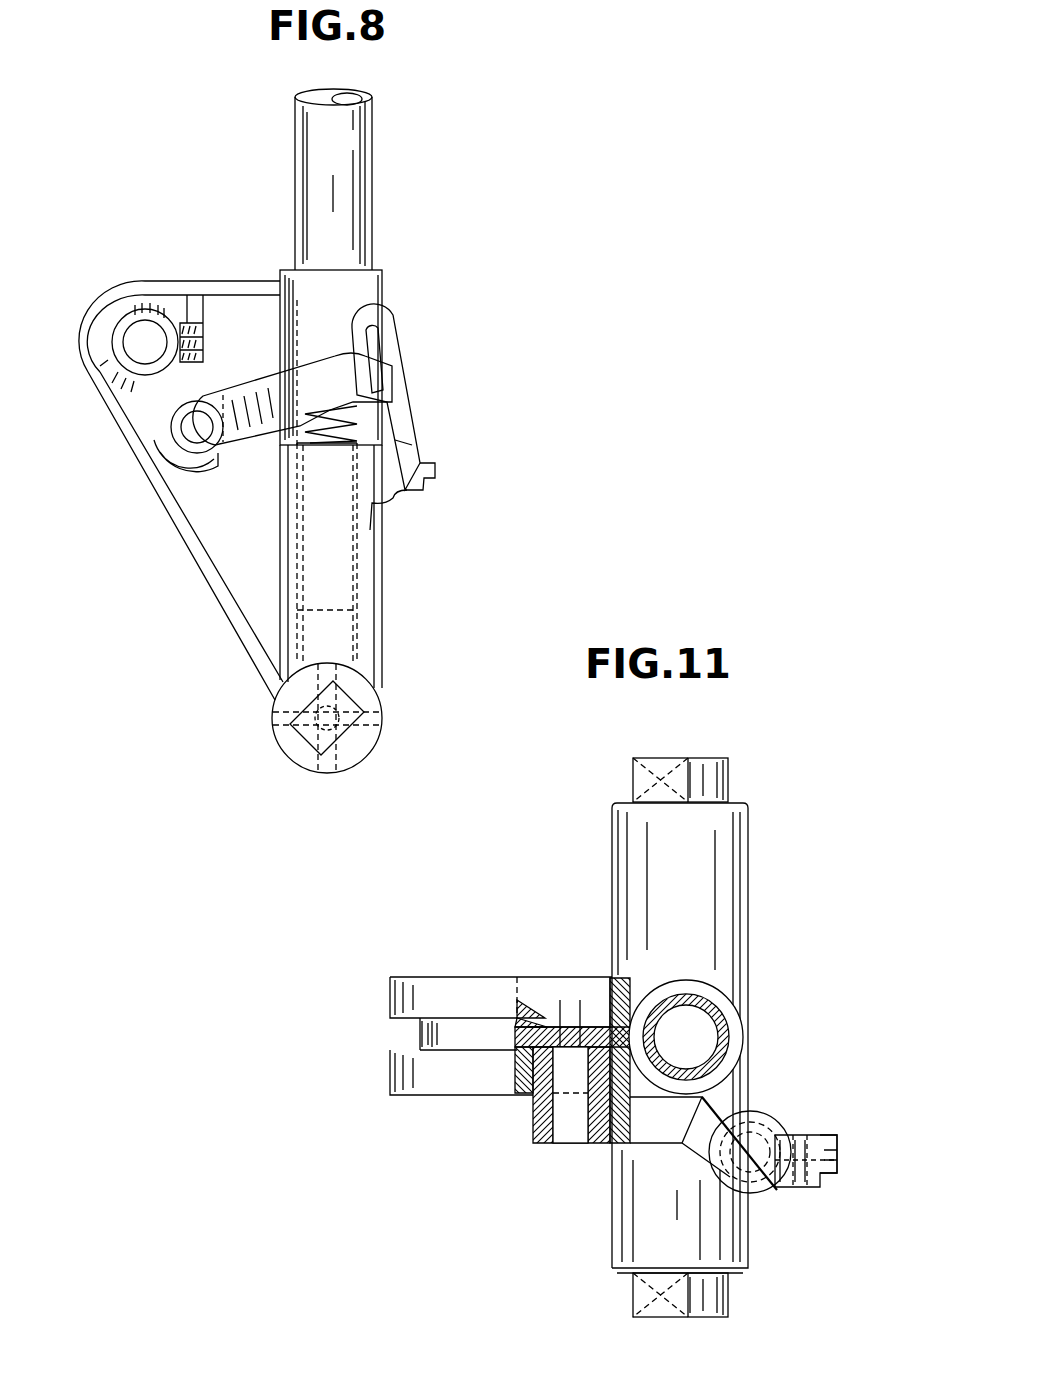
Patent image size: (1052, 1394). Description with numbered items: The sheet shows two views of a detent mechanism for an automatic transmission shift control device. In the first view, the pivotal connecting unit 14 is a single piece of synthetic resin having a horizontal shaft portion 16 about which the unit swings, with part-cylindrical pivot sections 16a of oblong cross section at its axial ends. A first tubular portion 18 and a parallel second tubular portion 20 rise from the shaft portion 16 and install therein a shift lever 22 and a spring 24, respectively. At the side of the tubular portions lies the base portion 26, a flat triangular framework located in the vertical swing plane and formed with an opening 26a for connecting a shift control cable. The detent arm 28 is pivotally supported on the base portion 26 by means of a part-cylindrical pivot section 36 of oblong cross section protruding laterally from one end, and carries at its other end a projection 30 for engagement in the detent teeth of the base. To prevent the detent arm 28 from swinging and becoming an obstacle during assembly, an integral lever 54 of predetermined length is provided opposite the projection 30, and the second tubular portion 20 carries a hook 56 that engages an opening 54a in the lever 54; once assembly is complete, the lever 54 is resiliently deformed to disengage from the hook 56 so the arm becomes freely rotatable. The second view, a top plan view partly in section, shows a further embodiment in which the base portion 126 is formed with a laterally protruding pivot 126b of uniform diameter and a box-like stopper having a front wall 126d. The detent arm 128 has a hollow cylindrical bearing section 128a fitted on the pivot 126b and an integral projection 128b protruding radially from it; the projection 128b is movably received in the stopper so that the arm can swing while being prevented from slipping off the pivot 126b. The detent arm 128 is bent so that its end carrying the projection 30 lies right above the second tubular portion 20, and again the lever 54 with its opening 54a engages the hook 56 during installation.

In FIG. 8, the pivotal connecting unit 14 is at (80, 320).
In FIG. 11, the pivotal connecting unit 14 is at (378, 1068).
In FIG. 8, the horizontal shaft portion 16 is at (383, 720).
In FIG. 11, the horizontal shaft portion 16 is at (725, 880).
In FIG. 8, the pivot sections 16a is at (307, 737).
In FIG. 11, the pivot sections 16a is at (637, 780).
In FIG. 8, the first tubular portion 18 is at (332, 333).
In FIG. 11, the first tubular portion 18 is at (710, 995).
In FIG. 8, the second tubular portion 20 is at (362, 560).
In FIG. 11, the second tubular portion 20 is at (770, 1113).
In FIG. 8, the shift lever 22 is at (355, 180).
In FIG. 11, the shift lever 22 is at (723, 1038).
In FIG. 8, the spring 24 is at (337, 407).
In FIG. 11, the spring 24 is at (753, 1187).
In FIG. 8, the base portion 26 is at (207, 588).
In FIG. 8, the opening 26a is at (143, 333).
In FIG. 8, the detent arm 28 is at (257, 375).
In FIG. 8, the projection 30 is at (393, 312).
In FIG. 11, the projection 30 is at (805, 1190).
In FIG. 8, the pivot section 36 is at (183, 440).
In FIG. 8, the lever 54 is at (407, 490).
In FIG. 11, the lever 54 is at (840, 1140).
In FIG. 8, the opening 54a is at (412, 445).
In FIG. 8, the hook 56 is at (428, 477).
In FIG. 11, the hook 56 is at (838, 1157).
In FIG. 11, the base portion 126 is at (452, 1080).
In FIG. 11, the pivot 126b is at (570, 1123).
In FIG. 11, the front wall 126d is at (548, 1033).
In FIG. 11, the detent arm 128 is at (658, 1130).
In FIG. 11, the hollow cylindrical bearing section 128a is at (533, 1120).
In FIG. 11, the projection 128b is at (572, 1060).